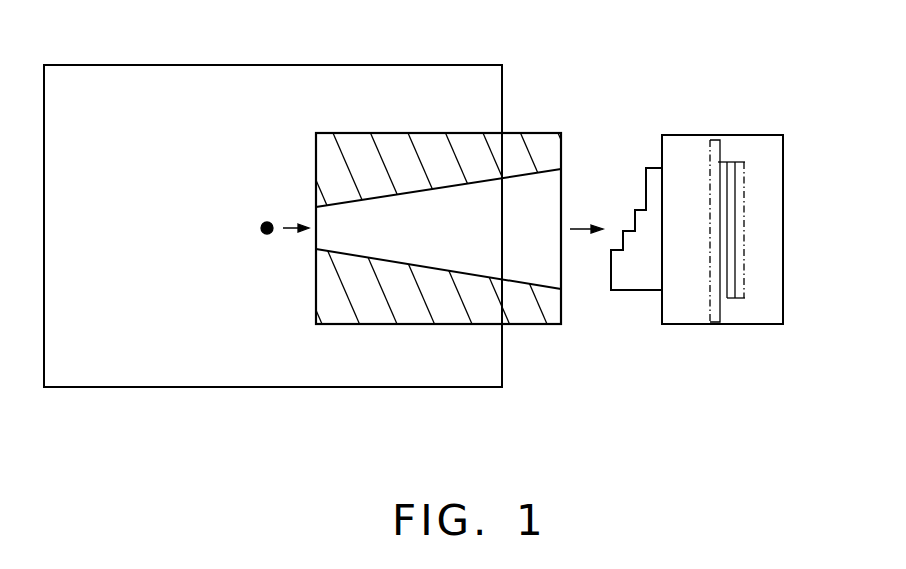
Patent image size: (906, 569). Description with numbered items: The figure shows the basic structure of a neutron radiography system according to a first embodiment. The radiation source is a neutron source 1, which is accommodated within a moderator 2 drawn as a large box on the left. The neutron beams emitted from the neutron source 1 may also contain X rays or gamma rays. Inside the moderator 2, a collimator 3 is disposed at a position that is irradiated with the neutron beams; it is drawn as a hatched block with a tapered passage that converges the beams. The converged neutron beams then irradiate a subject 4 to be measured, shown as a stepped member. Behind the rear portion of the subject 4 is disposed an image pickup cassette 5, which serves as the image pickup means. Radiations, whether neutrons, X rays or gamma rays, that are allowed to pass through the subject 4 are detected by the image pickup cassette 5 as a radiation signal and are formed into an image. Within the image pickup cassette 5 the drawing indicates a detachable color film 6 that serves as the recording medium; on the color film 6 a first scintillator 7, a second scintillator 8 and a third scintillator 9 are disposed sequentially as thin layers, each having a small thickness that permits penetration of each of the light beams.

The neutron source 1 is at (264, 221).
The moderator 2 is at (138, 98).
The collimator 3 is at (402, 180).
The subject 4 is at (646, 190).
The image pickup cassette 5 is at (783, 305).
The color film 6 is at (710, 168).
The first scintillator 7 is at (720, 325).
The second scintillator 8 is at (733, 160).
The third scintillator 9 is at (738, 298).